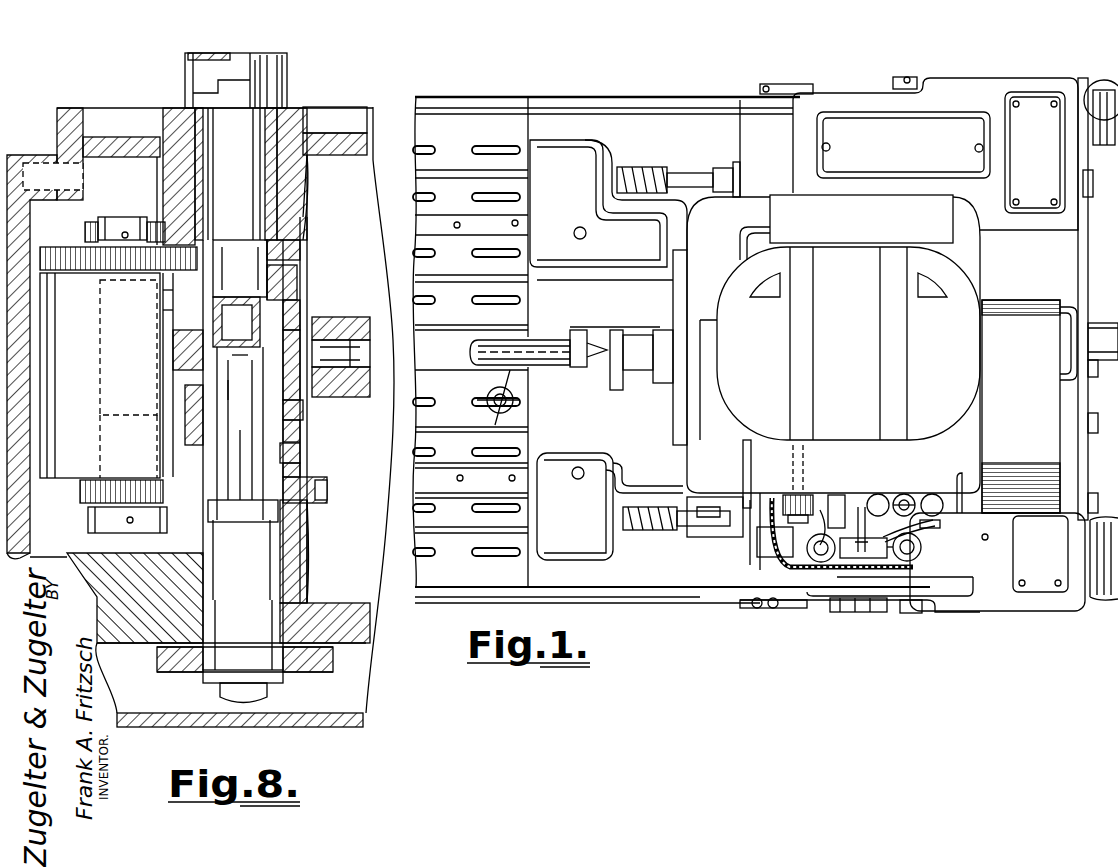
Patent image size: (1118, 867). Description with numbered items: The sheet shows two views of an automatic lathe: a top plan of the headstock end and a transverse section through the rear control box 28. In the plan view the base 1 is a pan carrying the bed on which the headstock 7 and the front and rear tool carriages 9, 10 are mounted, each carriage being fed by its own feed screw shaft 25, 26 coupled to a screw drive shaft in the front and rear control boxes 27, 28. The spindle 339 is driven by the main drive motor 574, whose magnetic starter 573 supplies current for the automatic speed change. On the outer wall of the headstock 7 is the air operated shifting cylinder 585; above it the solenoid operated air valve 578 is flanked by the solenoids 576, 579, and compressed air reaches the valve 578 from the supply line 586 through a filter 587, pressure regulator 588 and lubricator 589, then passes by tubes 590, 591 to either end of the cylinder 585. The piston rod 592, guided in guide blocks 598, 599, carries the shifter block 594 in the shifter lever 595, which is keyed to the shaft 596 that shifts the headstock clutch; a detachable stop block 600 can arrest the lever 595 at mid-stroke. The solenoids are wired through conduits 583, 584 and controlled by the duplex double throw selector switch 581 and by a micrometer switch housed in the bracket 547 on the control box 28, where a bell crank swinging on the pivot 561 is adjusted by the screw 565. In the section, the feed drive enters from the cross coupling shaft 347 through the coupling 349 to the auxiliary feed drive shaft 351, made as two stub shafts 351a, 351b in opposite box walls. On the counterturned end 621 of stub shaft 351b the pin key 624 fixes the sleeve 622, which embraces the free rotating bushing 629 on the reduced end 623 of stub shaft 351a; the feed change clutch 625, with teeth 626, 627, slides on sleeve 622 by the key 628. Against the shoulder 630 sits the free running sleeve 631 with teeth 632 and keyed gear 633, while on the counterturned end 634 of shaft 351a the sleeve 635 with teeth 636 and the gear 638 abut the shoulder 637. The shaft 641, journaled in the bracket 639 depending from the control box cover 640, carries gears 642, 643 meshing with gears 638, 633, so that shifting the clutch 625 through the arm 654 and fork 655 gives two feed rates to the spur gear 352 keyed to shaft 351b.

In FIG. 1, the base 1 is at (668, 600).
In FIG. 1, the headstock 7 is at (975, 440).
In FIG. 1, the front tool carriage 9 is at (572, 150).
In FIG. 1, the rear tool carriage 10 is at (585, 560).
In FIG. 1, the front feed screw shaft 25 is at (680, 170).
In FIG. 1, the rear feed screw shaft 26 is at (680, 528).
In FIG. 1, the front control box 27 is at (842, 103).
In FIG. 8, the rear control box 28 is at (70, 108).
In FIG. 1, the rear control box 28 is at (1003, 611).
In FIG. 1, the spindle 339 is at (622, 325).
In FIG. 1, the bracket 547 is at (765, 575).
In FIG. 1, the bell crank lever pivot 561 is at (768, 565).
In FIG. 1, the adjusting screw 565 is at (790, 570).
In FIG. 1, the magnetic starter 573 is at (858, 232).
In FIG. 1, the main drive motor 574 is at (738, 405).
In FIG. 1, the solenoid 576 is at (905, 560).
In FIG. 1, the solenoid operated air valve 578 is at (858, 558).
In FIG. 1, the solenoid 579 is at (822, 565).
In FIG. 1, the duplex double throw selector switch 581 is at (738, 490).
In FIG. 1, the conduit 583 is at (755, 585).
In FIG. 1, the conduit 584 is at (738, 258).
In FIG. 1, the air operated shifting cylinder 585 is at (930, 523).
In FIG. 1, the air supply line 586 is at (958, 473).
In FIG. 1, the filter 587 is at (932, 494).
In FIG. 1, the pressure regulator 588 is at (904, 494).
In FIG. 1, the lubricator 589 is at (878, 494).
In FIG. 1, the tube 590 is at (900, 580).
In FIG. 1, the tube 591 is at (920, 553).
In FIG. 1, the piston rod 592 is at (833, 492).
In FIG. 1, the shifter block 594 is at (813, 548).
In FIG. 1, the shifter lever 595 is at (790, 493).
In FIG. 1, the shifter shaft 596 is at (775, 469).
In FIG. 1, the guide block 598 is at (725, 530).
In FIG. 1, the guide block 599 is at (860, 505).
In FIG. 1, the stop block 600 is at (835, 493).
In FIG. 8, the control box cover 640 is at (35, 163).
In FIG. 1, the control box cover 640 is at (1045, 592).
In FIG. 8, the cross coupling shaft 347 is at (290, 68).
In FIG. 8, the coupling 349 is at (195, 90).
In FIG. 8, the rear auxiliary feed drive shaft 351 is at (290, 95).
In FIG. 8, the stub shaft 351a is at (280, 183).
In FIG. 8, the stub shaft 351b is at (283, 542).
In FIG. 8, the spur gear 352 is at (310, 672).
In FIG. 8, the counterturned end 621 is at (300, 452).
In FIG. 8, the sleeve 622 is at (300, 432).
In FIG. 8, the reduced end 623 is at (235, 345).
In FIG. 8, the pin key 624 is at (217, 398).
In FIG. 8, the feed change clutch 625 is at (300, 315).
In FIG. 8, the clutch teeth 626 is at (300, 290).
In FIG. 8, the clutch teeth 627 is at (303, 415).
In FIG. 8, the key 628 is at (234, 453).
In FIG. 8, the free rotating bushing 629 is at (236, 322).
In FIG. 8, the shoulder 630 is at (245, 505).
In FIG. 8, the free rotating sleeve 631 is at (300, 470).
In FIG. 8, the teeth 632 is at (190, 435).
In FIG. 8, the gear 633 is at (327, 490).
In FIG. 8, the counterturned end 634 is at (228, 262).
In FIG. 8, the sleeve 635 is at (178, 295).
In FIG. 8, the teeth 636 is at (180, 315).
In FIG. 8, the shoulder 637 is at (240, 262).
In FIG. 8, the gear 638 is at (300, 250).
In FIG. 8, the bracket 639 is at (65, 462).
In FIG. 8, the shaft 641 is at (122, 217).
In FIG. 8, the gear 642 is at (78, 270).
In FIG. 8, the gear 643 is at (115, 480).
In FIG. 8, the downwardly extending arm 654 is at (335, 317).
In FIG. 8, the shifter fork 655 is at (345, 392).